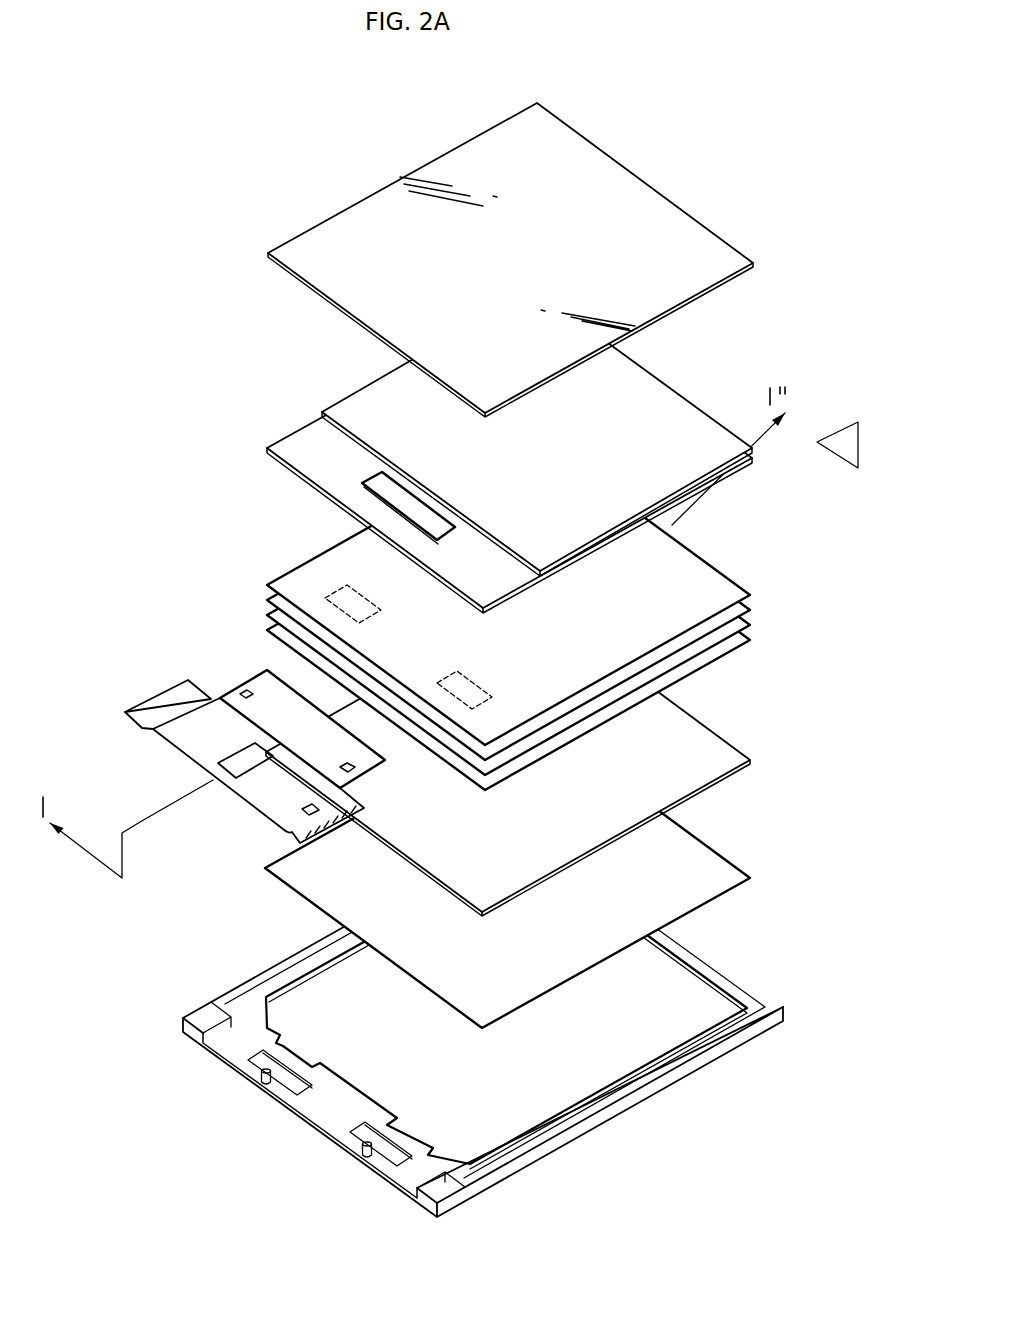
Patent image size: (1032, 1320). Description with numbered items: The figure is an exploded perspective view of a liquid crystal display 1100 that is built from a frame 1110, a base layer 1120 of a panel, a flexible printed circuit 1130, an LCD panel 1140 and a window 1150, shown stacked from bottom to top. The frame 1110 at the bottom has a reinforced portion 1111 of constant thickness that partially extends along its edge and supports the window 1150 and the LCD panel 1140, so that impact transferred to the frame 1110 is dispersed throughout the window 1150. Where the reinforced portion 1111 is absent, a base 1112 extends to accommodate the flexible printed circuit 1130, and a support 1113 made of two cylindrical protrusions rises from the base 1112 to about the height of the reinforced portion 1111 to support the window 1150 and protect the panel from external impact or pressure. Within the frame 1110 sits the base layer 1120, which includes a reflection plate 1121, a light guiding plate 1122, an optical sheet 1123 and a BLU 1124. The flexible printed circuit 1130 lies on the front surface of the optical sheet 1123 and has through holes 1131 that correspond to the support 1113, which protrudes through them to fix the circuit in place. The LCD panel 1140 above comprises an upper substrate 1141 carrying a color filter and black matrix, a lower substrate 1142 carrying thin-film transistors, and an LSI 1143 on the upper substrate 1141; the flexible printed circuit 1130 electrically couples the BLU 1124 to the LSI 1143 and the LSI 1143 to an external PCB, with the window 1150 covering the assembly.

The liquid crystal display 1100 is at (253, 124).
The frame 1110 is at (482, 1019).
The reinforced portion 1111 is at (190, 1032).
The base 1112 is at (247, 1032).
The support 1113 is at (363, 1146).
The base layer of a panel 1120 is at (592, 731).
The reflection plate 1121 is at (710, 848).
The light guiding plate 1122 is at (720, 748).
The optical sheet 1123 is at (764, 593).
The BLU 1124 is at (492, 686).
The flexible printed circuit 1130 is at (247, 740).
The through holes 1131 is at (242, 691).
The LCD panel 1140 is at (462, 451).
The upper substrate 1141 is at (514, 432).
The lower substrate 1142 is at (286, 446).
The LSI 1143 is at (382, 487).
The window 1150 is at (645, 203).